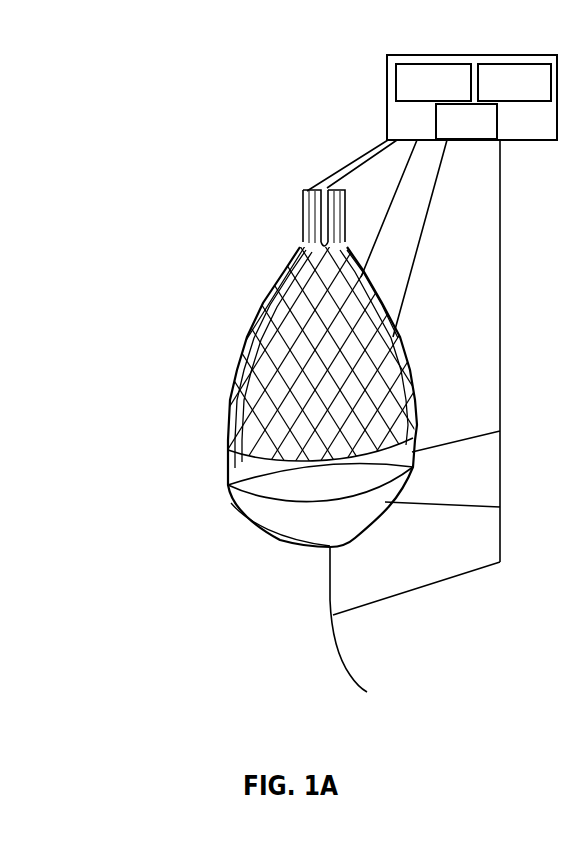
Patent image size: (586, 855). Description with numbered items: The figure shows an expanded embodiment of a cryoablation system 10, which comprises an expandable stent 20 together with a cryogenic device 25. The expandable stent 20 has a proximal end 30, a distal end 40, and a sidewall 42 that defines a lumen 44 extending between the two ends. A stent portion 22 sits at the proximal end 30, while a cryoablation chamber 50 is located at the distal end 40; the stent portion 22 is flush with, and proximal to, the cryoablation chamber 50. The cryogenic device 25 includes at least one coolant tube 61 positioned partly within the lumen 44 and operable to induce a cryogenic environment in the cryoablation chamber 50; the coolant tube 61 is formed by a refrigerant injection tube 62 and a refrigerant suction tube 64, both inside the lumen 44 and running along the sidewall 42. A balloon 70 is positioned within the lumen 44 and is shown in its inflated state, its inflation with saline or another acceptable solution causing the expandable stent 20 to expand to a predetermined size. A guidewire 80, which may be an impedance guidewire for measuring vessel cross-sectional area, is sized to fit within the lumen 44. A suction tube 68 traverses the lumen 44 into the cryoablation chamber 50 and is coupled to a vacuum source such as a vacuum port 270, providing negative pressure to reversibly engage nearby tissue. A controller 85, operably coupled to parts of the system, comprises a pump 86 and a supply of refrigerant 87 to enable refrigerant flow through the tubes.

The cryoablation system 10 is at (222, 235).
The expandable stent 20 is at (283, 391).
The stent portion 22 is at (312, 302).
The cryogenic device 25 is at (105, 285).
The proximal end 30 is at (350, 200).
The distal end 40 is at (420, 465).
The sidewall 42 is at (408, 372).
The lumen 44 is at (318, 186).
The cryoablation chamber 50 is at (248, 472).
The coolant tube 61 is at (178, 362).
The refrigerant injection tube 62 is at (253, 343).
The refrigerant suction tube 64 is at (262, 300).
The suction tube 68 is at (378, 300).
The balloon 70 is at (320, 517).
The guidewire 80 is at (325, 636).
The controller 85 is at (387, 92).
The pump 86 is at (433, 82).
The supply of refrigerant 87 is at (514, 82).
The vacuum port 270 is at (466, 121).